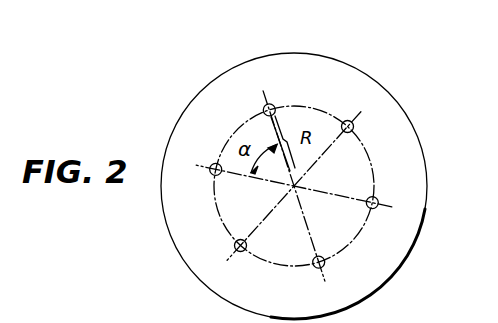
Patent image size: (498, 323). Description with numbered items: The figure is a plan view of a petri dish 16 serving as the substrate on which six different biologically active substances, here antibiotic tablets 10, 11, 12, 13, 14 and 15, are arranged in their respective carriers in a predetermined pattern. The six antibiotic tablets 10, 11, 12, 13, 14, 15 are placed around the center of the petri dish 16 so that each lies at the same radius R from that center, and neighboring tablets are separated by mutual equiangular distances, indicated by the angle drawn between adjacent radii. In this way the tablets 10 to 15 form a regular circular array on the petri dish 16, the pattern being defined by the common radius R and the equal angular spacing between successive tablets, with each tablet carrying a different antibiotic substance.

The antibiotic tablet 10 is at (270, 104).
The antibiotic tablet 11 is at (354, 127).
The antibiotic tablet 12 is at (378, 203).
The antibiotic tablet 13 is at (323, 267).
The antibiotic tablet 14 is at (234, 244).
The antibiotic tablet 15 is at (211, 165).
The petri dish 16 is at (357, 45).